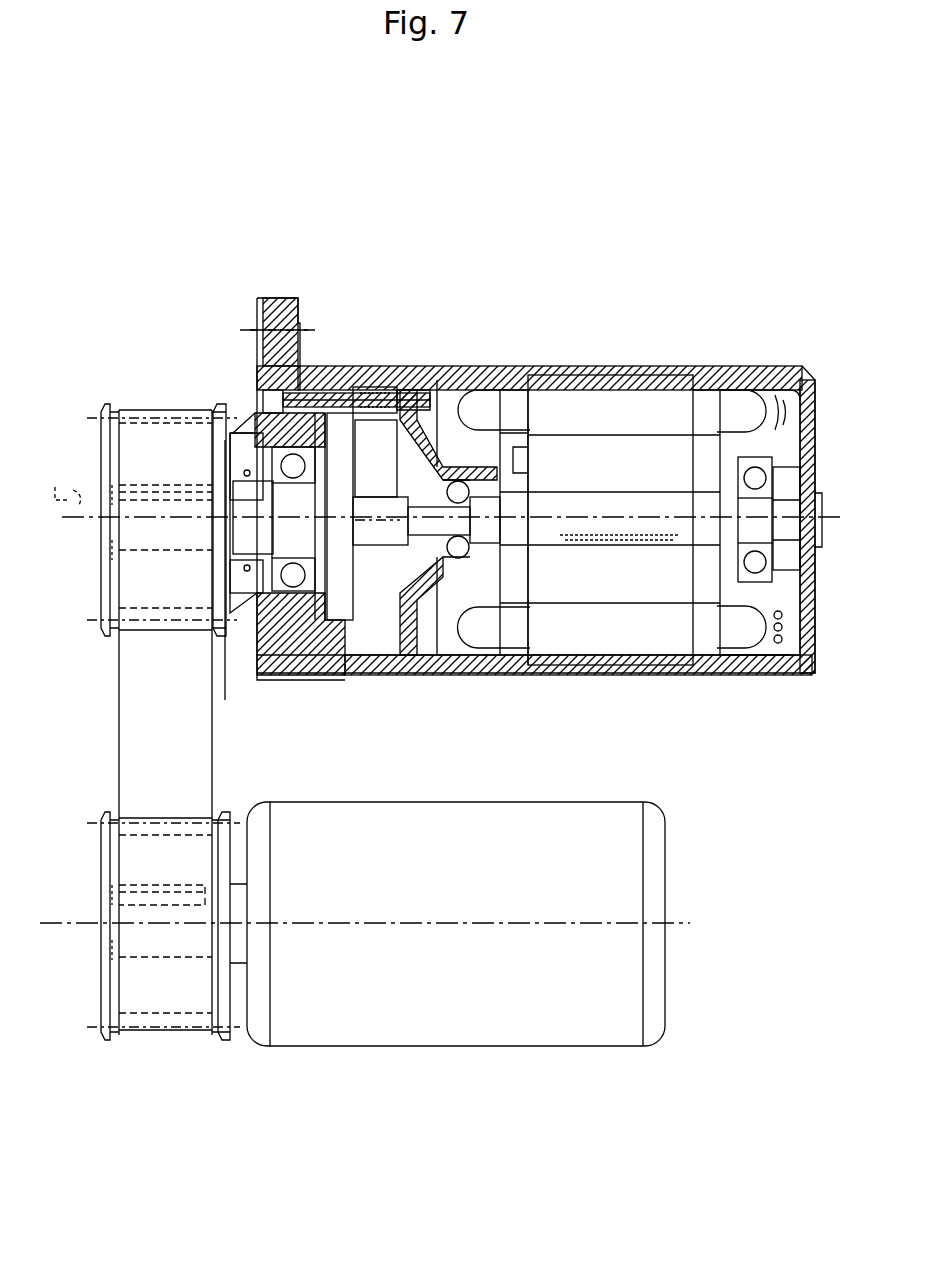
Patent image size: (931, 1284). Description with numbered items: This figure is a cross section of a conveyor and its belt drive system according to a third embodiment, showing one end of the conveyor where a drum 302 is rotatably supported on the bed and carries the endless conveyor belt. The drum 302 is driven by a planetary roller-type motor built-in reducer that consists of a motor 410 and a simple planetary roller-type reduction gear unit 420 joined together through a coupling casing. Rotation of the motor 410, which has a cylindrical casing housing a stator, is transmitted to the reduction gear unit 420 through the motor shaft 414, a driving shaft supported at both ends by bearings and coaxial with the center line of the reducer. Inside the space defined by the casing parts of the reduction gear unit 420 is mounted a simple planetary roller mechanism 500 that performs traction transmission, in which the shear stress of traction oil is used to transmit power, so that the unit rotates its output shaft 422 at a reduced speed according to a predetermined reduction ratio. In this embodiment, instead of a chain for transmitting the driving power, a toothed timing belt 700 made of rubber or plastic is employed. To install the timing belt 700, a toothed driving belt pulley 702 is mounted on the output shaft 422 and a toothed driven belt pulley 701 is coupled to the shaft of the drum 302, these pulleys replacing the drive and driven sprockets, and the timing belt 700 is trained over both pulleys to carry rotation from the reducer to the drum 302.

The drum 302 is at (440, 1033).
The motor 410 is at (676, 357).
The motor shaft 414 is at (553, 537).
The reduction gear unit 420 is at (397, 357).
The output shaft 422 is at (150, 550).
The simple planetary roller mechanism 500 is at (377, 580).
The toothed timing belt 700 is at (140, 757).
The toothed driven belt pulley 701 is at (105, 996).
The toothed driving belt pulley 702 is at (107, 458).